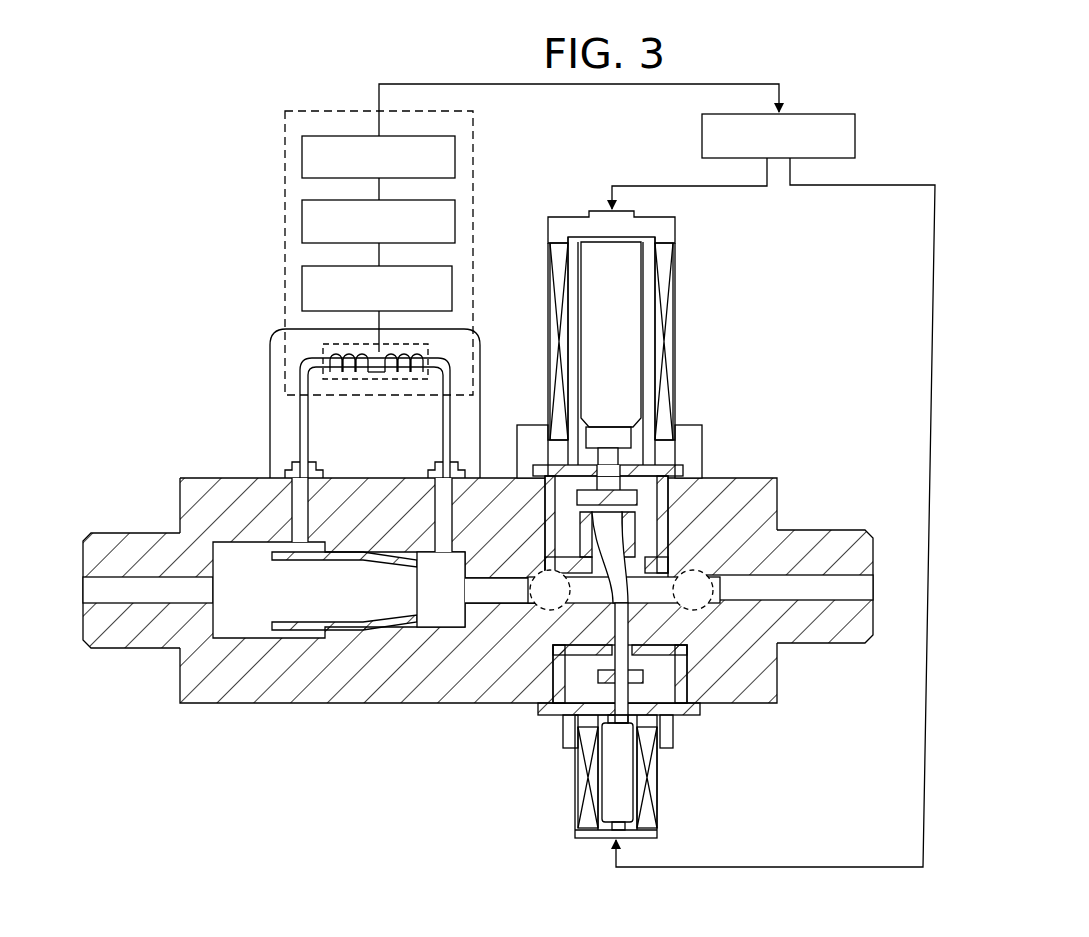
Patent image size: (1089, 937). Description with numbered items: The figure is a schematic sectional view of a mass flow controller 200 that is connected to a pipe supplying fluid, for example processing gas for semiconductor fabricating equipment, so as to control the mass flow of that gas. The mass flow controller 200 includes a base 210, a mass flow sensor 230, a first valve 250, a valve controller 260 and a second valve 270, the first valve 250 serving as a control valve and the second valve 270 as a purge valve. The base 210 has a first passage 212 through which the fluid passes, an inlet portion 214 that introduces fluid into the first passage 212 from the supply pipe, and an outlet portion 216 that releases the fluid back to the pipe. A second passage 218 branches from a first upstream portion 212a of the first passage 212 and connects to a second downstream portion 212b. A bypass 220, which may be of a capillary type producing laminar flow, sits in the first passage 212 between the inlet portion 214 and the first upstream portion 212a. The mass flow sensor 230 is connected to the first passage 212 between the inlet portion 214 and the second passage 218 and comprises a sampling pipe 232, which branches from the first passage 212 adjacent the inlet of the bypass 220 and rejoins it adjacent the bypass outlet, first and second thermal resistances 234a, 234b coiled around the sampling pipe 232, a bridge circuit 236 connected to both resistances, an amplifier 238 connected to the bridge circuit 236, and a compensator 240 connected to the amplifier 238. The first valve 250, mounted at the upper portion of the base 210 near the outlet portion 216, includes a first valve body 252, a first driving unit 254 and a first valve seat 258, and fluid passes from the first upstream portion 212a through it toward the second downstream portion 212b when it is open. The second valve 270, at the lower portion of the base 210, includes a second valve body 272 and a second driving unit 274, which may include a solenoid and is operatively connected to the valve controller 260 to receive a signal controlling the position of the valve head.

The mass flow controller 200 is at (962, 202).
The base 210 is at (767, 493).
The first passage 212 is at (132, 590).
The first upstream portion 212a is at (540, 610).
The second downstream portion 212b is at (707, 608).
The inlet portion 214 is at (143, 645).
The outlet portion 216 is at (810, 640).
The second passage 218 is at (553, 648).
The bypass 220 is at (300, 630).
The mass flow sensor 230 is at (299, 236).
The sampling pipe 232 is at (305, 418).
The first thermal resistance 234a is at (323, 348).
The second thermal resistance 234b is at (308, 353).
The bridge circuit 236 is at (302, 287).
The amplifier 238 is at (302, 219).
The compensator 240 is at (302, 153).
The first valve 250 is at (651, 350).
The first valve body 252 is at (655, 502).
The first driving unit 254 is at (665, 337).
The first valve seat 258 is at (640, 492).
The valve controller 260 is at (857, 138).
The second valve 270 is at (599, 776).
The second valve body 272 is at (655, 690).
The second driving unit 274 is at (653, 797).